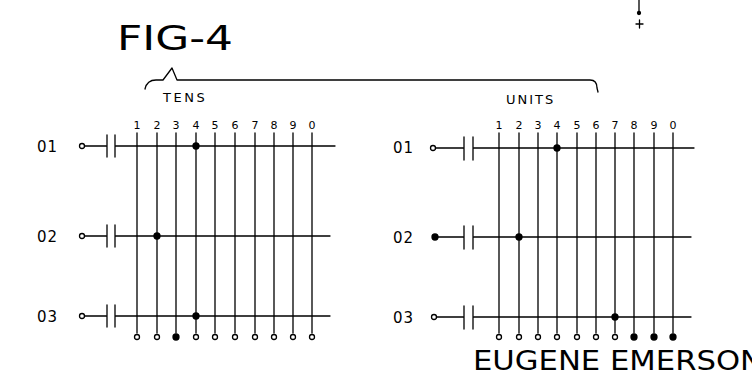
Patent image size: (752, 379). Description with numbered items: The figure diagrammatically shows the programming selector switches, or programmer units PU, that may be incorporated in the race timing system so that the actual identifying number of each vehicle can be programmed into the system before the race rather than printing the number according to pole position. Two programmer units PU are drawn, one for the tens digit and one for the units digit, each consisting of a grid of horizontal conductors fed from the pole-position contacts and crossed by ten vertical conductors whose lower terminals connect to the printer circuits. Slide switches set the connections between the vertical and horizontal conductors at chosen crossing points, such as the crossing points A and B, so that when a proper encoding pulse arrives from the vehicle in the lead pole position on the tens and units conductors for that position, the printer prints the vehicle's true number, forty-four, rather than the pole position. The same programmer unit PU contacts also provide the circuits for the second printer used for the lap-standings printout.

The crossing point A is at (203, 137).
The crossing point B is at (551, 154).
The programmer units PU is at (409, 336).